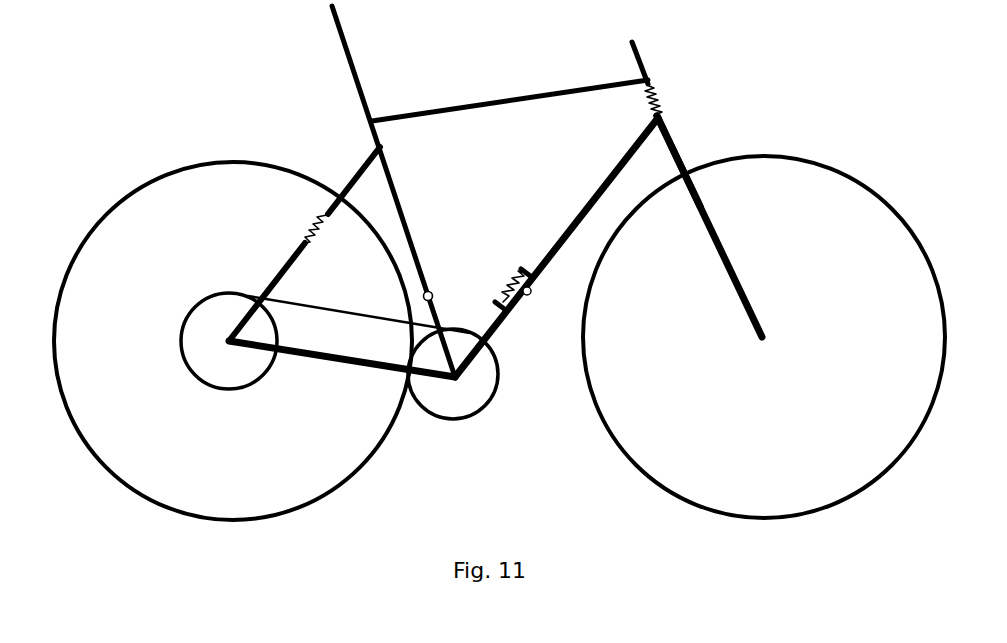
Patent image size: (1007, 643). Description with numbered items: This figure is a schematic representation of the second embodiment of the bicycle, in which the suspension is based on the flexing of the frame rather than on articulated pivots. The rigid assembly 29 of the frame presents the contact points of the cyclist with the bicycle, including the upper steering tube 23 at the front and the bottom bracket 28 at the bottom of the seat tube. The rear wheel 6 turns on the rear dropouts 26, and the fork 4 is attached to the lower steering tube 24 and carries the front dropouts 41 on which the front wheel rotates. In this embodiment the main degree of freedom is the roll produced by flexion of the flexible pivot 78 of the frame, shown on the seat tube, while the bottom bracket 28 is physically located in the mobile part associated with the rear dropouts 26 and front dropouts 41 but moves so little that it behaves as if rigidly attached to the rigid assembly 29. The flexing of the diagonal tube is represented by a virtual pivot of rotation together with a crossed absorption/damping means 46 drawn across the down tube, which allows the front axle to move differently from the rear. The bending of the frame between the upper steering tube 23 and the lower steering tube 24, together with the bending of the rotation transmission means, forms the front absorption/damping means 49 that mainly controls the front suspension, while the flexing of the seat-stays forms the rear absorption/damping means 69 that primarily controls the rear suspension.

The fork 4 is at (729, 252).
The rear wheel 6 is at (118, 489).
The upper steering tube 23 is at (643, 56).
The lower steering tube 24 is at (672, 143).
The rear dropouts 26 is at (222, 338).
The bottom bracket 28 is at (452, 390).
The rigid assembly 29 is at (481, 98).
The front dropouts 41 is at (766, 338).
The crossed absorption/damping means 46 is at (510, 270).
The front absorption/damping means 49 is at (662, 100).
The rear absorption/damping means 69 is at (307, 222).
The flexible pivot 78 is at (432, 291).